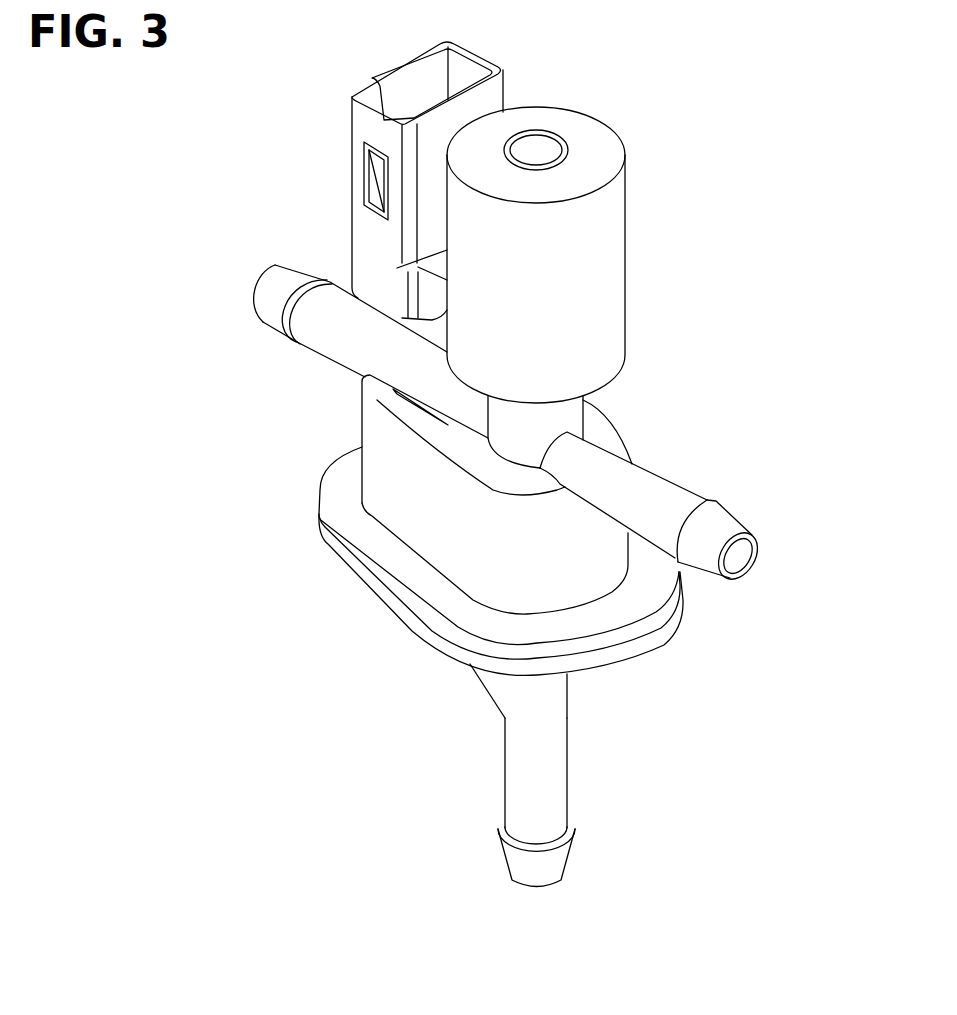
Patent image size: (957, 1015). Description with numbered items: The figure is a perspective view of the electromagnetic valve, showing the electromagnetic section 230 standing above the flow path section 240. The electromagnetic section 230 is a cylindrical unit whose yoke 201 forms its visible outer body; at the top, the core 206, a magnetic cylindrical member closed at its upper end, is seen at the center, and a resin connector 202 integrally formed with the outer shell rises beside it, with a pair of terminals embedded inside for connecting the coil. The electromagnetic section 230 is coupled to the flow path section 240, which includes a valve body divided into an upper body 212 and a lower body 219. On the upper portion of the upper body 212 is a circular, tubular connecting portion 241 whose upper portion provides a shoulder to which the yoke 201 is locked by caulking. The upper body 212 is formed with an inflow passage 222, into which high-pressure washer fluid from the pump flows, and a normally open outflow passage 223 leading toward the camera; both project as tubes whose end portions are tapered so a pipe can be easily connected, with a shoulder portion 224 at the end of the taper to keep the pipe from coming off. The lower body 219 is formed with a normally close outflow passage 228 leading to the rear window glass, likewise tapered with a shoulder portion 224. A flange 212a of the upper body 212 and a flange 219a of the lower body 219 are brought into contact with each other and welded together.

The yoke 201 is at (607, 304).
The connector 202 is at (503, 88).
The core 206 is at (550, 148).
The upper body 212 is at (410, 519).
The flange of the upper body 212a is at (336, 494).
The lower body 219 is at (488, 694).
The flange of the lower body 219a is at (387, 611).
The inflow passage 222 is at (333, 340).
The normally open outflow passage 223 is at (655, 490).
The shoulder portion 224 is at (498, 826).
The normally close outflow passage 228 is at (555, 778).
The electromagnetic section 230 is at (628, 222).
The flow path section 240 is at (679, 612).
The connecting portion 241 is at (570, 414).